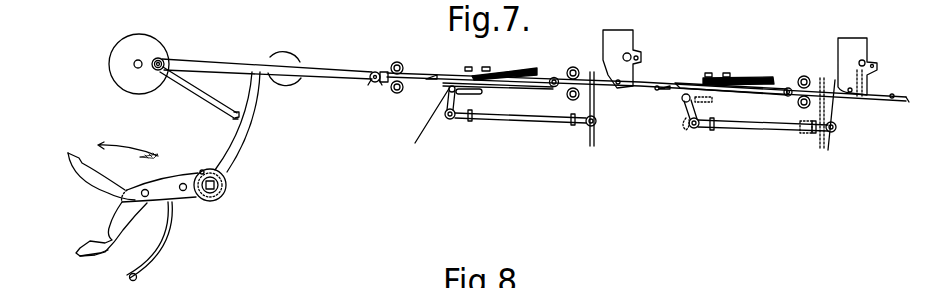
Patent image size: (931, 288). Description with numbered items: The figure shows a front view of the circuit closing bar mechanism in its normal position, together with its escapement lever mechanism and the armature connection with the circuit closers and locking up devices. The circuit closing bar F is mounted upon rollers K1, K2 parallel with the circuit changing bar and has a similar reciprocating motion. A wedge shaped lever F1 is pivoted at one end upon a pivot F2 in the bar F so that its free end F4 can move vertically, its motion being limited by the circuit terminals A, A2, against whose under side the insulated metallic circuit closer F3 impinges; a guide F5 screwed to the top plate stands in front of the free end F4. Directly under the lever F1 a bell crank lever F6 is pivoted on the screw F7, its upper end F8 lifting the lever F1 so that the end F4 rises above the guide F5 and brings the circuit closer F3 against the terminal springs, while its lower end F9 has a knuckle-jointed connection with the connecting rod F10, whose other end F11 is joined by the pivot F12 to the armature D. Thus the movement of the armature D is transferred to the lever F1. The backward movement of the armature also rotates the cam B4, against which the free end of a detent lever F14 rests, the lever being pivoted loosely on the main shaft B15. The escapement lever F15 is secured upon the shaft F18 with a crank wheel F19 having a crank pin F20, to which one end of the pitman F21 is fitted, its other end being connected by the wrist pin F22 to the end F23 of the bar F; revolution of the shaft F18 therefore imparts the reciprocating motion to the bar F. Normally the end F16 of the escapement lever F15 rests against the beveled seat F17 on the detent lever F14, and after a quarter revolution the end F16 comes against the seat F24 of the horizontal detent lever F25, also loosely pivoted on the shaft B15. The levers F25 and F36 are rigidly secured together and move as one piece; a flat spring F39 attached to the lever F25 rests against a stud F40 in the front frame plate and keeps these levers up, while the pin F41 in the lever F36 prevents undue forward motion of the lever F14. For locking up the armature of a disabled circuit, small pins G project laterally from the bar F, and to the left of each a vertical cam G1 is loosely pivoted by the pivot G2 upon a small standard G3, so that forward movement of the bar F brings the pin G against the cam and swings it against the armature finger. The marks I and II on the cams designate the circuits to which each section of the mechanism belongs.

The shaft F18 is at (134, 64).
The crank wheel F19 is at (138, 80).
The crank pin F20 is at (166, 57).
The pitman F21 is at (323, 81).
The cam B4 is at (285, 56).
The escapement lever F15 is at (190, 92).
The end of the escapement lever F16 is at (236, 110).
The seat F17 is at (233, 121).
The detent lever F14 is at (253, 112).
The main shaft B15 is at (218, 190).
The pin F41 is at (202, 170).
The horizontal detent lever F25 is at (98, 187).
The lever F36 is at (115, 214).
The flat spring F39 is at (171, 242).
The stud F40 is at (137, 277).
The seat F24 is at (83, 162).
The circuit closing bar F is at (413, 76).
The wrist pin F22 is at (372, 72).
The end of the circuit closing bar F23 is at (378, 86).
The roller K1 is at (399, 61).
The roller K2 is at (394, 94).
The guide F5 is at (433, 75).
The free end of the circuit closer F4 is at (448, 85).
The circuit terminal A is at (468, 67).
The circuit terminal A2 is at (487, 67).
The insulated metallic circuit closer F3 is at (514, 72).
The wedge shaped lever F1 is at (556, 70).
The pivot F2 is at (552, 90).
The bracket I is at (622, 59).
The vertical cam G1 is at (628, 38).
The pivot G2 is at (637, 54).
The pin G is at (655, 91).
The armature D is at (592, 148).
The pivot F12 is at (597, 122).
The connecting rod F10 is at (508, 124).
The end of the connecting rod F11 is at (573, 126).
The bell crank lever F6 is at (578, 108).
The upper end of the bell crank lever F8 is at (483, 93).
The screw F7 is at (425, 118).
The lower end of the bell crank lever F9 is at (448, 118).
The bracket II is at (857, 67).
The standard G3 is at (861, 100).